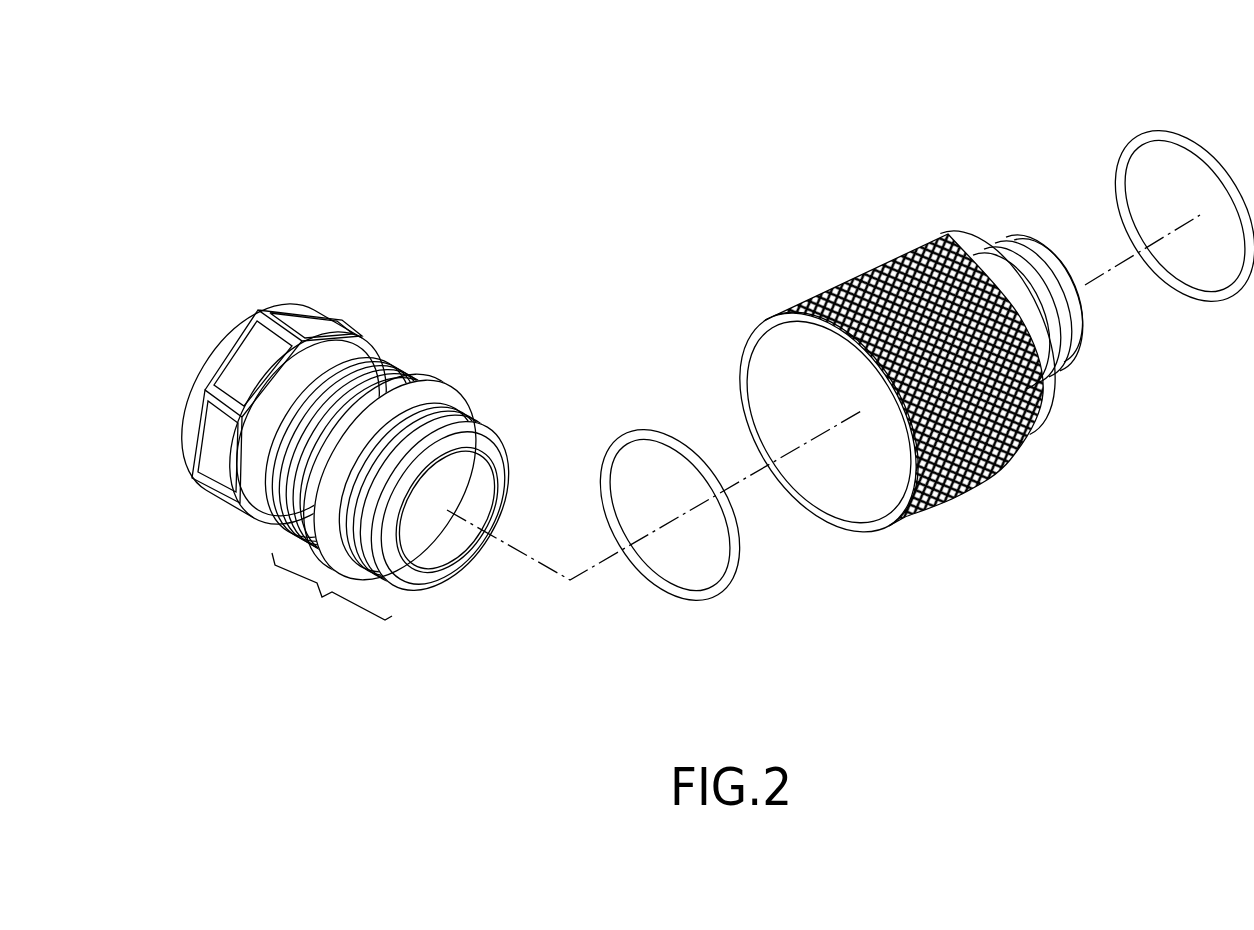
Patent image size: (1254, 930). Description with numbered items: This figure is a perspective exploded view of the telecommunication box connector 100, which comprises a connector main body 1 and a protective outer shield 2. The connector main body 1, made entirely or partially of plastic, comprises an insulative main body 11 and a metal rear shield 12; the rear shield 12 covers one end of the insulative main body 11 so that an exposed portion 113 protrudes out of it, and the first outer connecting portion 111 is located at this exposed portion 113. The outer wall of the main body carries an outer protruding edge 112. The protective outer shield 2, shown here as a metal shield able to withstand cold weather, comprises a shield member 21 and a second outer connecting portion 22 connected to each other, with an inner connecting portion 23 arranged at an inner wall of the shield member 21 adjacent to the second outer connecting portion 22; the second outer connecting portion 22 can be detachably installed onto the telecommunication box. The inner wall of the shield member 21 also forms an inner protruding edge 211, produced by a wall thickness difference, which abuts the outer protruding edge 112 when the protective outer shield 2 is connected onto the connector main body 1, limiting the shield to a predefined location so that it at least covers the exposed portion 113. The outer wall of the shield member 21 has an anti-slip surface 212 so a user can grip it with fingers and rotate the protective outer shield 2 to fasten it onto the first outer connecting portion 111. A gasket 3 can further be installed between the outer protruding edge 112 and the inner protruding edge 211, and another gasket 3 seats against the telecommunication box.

The telecommunication box connector 100 is at (627, 73).
The connector main body 1 is at (290, 283).
The insulative main body 11 is at (503, 420).
The first outer connecting portion 111 is at (433, 422).
The outer protruding edge 112 is at (417, 378).
The exposed portion 113 is at (332, 595).
The rear shield 12 is at (375, 316).
The protective outer shield 2 is at (902, 192).
The shield member 21 is at (828, 264).
The inner protruding edge 211 is at (890, 437).
The anti-slip surface 212 is at (983, 473).
The second outer connecting portion 22 is at (1046, 268).
The inner connecting portion 23 is at (840, 372).
The gasket 3 is at (1178, 142).